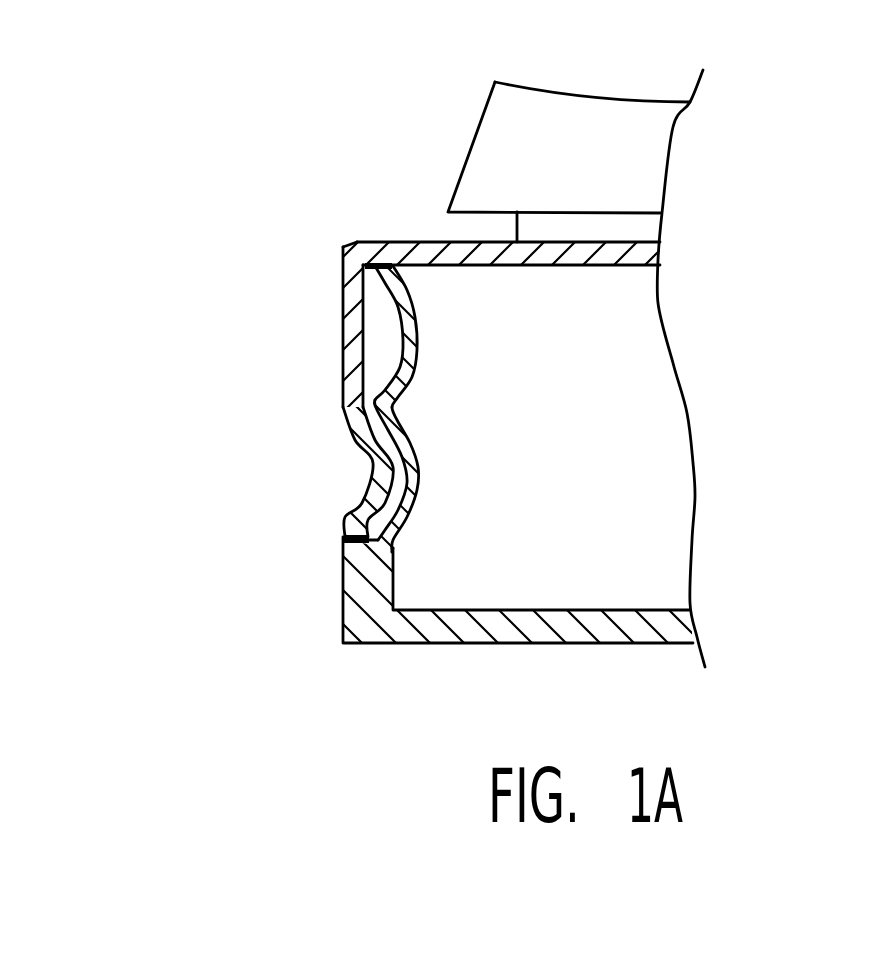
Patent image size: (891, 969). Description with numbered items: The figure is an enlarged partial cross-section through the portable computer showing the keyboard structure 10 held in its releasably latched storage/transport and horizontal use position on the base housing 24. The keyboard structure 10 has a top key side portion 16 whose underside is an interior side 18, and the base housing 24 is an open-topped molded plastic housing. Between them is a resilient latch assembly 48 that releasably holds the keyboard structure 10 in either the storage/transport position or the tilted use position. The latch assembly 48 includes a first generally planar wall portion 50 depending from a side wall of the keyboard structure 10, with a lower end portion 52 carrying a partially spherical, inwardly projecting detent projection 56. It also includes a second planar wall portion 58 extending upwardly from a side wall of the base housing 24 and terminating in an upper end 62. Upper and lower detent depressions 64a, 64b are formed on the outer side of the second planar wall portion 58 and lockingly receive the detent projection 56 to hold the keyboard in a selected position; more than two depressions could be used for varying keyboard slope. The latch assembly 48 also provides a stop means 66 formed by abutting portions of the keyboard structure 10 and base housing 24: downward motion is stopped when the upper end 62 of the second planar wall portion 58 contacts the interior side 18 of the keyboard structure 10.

The keyboard structure 10 is at (428, 236).
The top key side portion 16 is at (357, 240).
The interior side 18 is at (600, 270).
The base housing 24 is at (433, 652).
The latch assembly 48 is at (228, 183).
The first generally planar wall portion 50 is at (341, 256).
The lower end portion 52 is at (375, 403).
The detent projection 56 is at (372, 465).
The second planar wall portion 58 is at (400, 398).
The upper end 62 is at (390, 267).
The upper detent depression 64a is at (415, 330).
The lower detent depression 64b is at (372, 478).
The stop means 66 is at (605, 498).